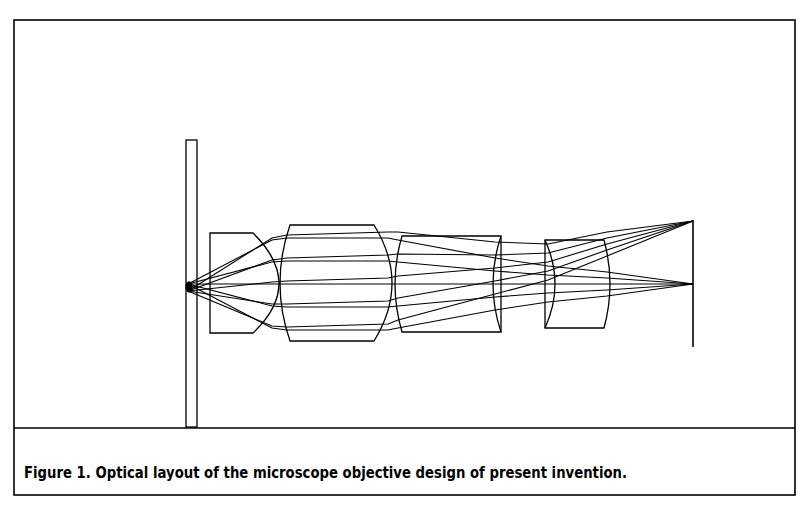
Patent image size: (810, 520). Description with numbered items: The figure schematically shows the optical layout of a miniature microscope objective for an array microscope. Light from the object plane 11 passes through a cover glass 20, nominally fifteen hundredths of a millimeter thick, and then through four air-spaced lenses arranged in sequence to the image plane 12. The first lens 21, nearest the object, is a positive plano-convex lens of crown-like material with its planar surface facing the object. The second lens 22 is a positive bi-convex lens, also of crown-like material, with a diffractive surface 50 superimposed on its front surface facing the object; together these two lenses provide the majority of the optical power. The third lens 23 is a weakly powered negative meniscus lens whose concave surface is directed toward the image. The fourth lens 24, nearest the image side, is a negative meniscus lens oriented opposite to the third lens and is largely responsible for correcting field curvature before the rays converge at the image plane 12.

The object plane 11 is at (174, 283).
The image plane 12 is at (688, 325).
The cover glass 20 is at (194, 138).
The first lens 21 is at (236, 215).
The second lens 22 is at (348, 207).
The third lens 23 is at (463, 215).
The fourth lens 24 is at (575, 220).
The diffractive surface 50 is at (277, 323).